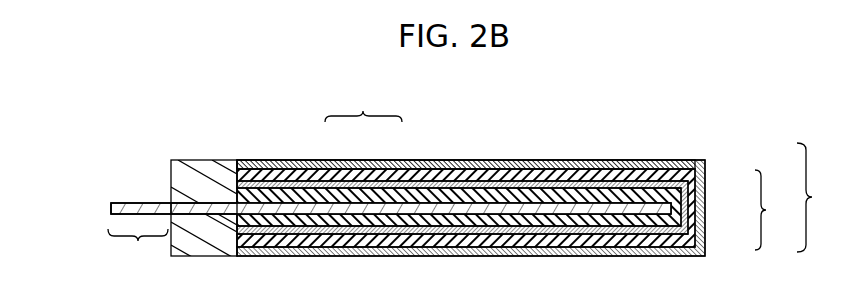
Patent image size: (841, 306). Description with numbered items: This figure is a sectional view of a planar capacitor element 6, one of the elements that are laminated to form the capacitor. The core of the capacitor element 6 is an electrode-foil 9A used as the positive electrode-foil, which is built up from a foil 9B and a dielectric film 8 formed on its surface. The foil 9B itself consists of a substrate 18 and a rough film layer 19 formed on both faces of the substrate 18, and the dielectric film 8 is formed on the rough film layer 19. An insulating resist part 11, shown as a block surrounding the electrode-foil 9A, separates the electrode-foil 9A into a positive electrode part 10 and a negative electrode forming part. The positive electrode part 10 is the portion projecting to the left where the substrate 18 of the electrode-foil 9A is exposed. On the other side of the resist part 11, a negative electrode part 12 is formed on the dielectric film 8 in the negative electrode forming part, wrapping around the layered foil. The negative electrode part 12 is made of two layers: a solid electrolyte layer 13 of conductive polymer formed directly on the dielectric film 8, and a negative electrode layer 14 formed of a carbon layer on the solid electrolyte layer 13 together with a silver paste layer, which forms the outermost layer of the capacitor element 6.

The capacitor element 6 is at (668, 147).
The dielectric film 8 is at (705, 165).
The electrode-foil 9A is at (819, 197).
The foil 9B is at (775, 210).
The positive electrode part 10 is at (139, 236).
The resist part 11 is at (205, 170).
The negative electrode part 12 is at (363, 101).
The solid electrolyte layer 13 is at (380, 170).
The negative electrode layer 14 is at (332, 167).
The substrate 18 is at (675, 211).
The rough film layer 19 is at (705, 183).